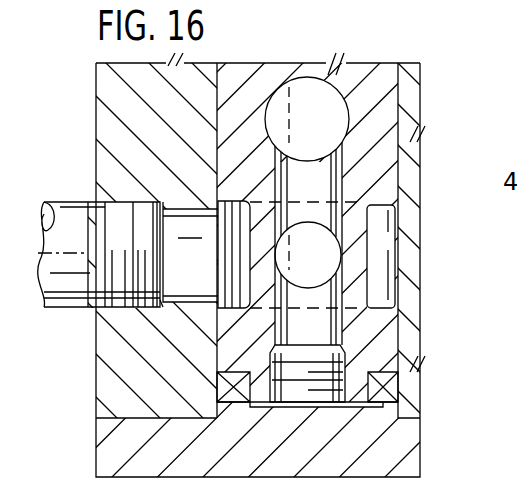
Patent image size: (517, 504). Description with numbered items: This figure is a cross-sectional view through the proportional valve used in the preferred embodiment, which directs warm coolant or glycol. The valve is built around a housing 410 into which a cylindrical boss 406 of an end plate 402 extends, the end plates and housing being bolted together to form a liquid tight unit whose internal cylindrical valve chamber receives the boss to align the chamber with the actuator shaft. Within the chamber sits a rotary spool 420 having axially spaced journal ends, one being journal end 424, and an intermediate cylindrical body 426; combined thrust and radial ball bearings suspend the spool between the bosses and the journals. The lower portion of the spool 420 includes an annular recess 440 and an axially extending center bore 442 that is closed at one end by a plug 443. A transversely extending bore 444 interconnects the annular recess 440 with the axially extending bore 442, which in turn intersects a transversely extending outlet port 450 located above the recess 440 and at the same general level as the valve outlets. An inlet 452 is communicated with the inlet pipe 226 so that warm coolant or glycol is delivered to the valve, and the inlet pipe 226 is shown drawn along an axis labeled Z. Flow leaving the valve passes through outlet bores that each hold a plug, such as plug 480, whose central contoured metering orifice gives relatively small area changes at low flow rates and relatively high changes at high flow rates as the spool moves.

The end plate 402 is at (420, 451).
The cylindrical boss 406 is at (217, 399).
The housing 410 is at (96, 118).
The rotary spool 420 is at (390, 108).
The journal end 424 is at (397, 347).
The intermediate cylindrical body 426 is at (218, 143).
The annular recess 440 is at (384, 229).
The axially extending center bore 442 is at (340, 333).
The plug 443 is at (323, 384).
The transversely extending bore 444 is at (318, 236).
The transversely extending outlet port 450 is at (325, 98).
The inlet 452 is at (172, 310).
The plug 480 is at (516, 350).
The inlet pipe 226 is at (63, 207).
The axis Z is at (54, 254).